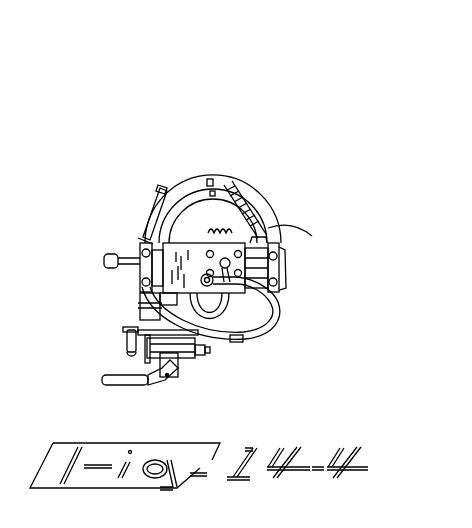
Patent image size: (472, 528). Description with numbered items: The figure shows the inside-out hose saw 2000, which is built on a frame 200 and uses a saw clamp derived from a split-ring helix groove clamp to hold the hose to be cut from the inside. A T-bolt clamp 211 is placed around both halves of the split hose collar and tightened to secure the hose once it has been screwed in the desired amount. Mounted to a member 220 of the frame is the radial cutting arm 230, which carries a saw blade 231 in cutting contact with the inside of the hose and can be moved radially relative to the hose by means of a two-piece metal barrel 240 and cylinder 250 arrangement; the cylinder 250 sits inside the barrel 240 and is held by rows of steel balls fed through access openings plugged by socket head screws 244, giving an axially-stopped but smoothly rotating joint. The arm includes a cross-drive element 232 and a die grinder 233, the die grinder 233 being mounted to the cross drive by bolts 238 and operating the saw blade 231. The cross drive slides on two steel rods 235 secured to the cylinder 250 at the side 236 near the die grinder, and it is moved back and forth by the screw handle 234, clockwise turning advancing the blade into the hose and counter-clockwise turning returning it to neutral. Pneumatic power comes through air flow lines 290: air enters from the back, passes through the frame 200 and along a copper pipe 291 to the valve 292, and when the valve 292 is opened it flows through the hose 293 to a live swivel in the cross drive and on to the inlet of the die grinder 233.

The inside-out hose saw 2000 is at (166, 132).
The bolts 238 is at (158, 215).
The frame 200 is at (140, 310).
The member 220 is at (143, 236).
The side 236 is at (280, 270).
The steel rods 235 is at (280, 245).
The die grinder 233 is at (210, 254).
The socket head screws 244 is at (210, 182).
The barrel 240 is at (224, 185).
The saw blade 231 is at (249, 213).
The radial cutting arm 230 is at (256, 213).
The cross-drive element 232 is at (253, 217).
The T-bolt clamp 211 is at (160, 202).
The cylinder 250 is at (140, 243).
The screw handle 234 is at (103, 253).
The hose 293 is at (273, 307).
The air flow lines 290 is at (125, 352).
The copper pipe 291 is at (123, 330).
The valve 292 is at (167, 378).